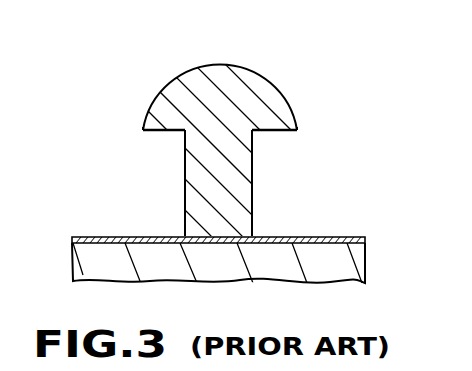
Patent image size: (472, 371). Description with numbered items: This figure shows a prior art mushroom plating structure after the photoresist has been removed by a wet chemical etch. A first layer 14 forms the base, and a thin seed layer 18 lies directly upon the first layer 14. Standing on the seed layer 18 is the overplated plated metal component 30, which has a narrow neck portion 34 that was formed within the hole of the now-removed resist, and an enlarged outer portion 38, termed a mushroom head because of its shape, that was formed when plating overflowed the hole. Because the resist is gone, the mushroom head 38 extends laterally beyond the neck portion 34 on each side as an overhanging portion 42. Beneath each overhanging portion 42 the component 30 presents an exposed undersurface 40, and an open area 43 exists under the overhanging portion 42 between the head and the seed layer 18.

The plated metal component 30 is at (185, 66).
The enlarged outer portion 38 is at (225, 82).
The neck portion 34 is at (203, 203).
The overhanging portion 42 is at (160, 108).
The exposed undersurface 40 is at (161, 134).
The open area 43 is at (153, 159).
The seed layer 18 is at (72, 239).
The first layer 14 is at (72, 265).